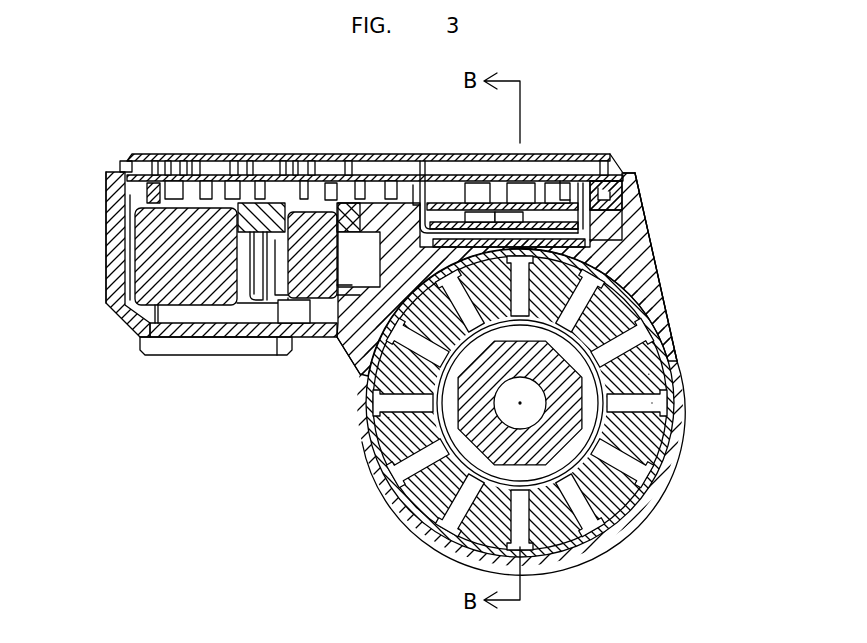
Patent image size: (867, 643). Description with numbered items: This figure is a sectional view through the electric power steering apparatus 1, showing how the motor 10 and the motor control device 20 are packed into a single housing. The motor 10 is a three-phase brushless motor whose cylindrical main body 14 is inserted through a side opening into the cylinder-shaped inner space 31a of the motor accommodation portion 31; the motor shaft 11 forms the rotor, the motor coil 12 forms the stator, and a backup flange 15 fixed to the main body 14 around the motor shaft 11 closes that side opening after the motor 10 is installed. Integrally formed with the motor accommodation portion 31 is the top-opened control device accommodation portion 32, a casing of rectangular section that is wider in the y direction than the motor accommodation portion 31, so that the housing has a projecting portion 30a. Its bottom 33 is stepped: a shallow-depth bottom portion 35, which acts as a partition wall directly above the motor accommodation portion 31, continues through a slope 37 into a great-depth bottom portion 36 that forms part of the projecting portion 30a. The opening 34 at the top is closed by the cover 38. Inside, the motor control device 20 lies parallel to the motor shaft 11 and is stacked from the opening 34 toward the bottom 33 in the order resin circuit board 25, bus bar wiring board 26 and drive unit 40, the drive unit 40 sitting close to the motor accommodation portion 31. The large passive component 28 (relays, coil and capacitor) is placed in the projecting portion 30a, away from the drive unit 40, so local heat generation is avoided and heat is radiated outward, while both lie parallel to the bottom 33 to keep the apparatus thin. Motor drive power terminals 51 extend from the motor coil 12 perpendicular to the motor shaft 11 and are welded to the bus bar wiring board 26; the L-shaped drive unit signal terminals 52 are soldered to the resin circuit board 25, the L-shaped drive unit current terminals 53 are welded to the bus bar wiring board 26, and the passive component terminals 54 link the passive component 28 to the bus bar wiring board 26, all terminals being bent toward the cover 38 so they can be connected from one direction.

The electric power steering apparatus 1 is at (58, 133).
The motor 10 is at (534, 403).
The motor shaft 11 is at (600, 390).
The stator 12 is at (489, 403).
The main body 14 is at (395, 455).
The backup flange 15 is at (375, 385).
The motor control device 20 is at (616, 186).
The resin circuit board 25 is at (323, 160).
The bus bar wiring board 26 is at (562, 165).
The passive component 28 is at (120, 313).
The projecting portion 30a is at (113, 255).
The motor accommodation portion 31 is at (668, 470).
The inner space 31a is at (405, 512).
The control device accommodation portion 32 is at (635, 208).
The bottom 33 is at (277, 340).
The opening 34 is at (126, 162).
The shallow-depth bottom portion 35 is at (622, 278).
The great-depth bottom portion 36 is at (208, 342).
The slope 37 is at (335, 337).
The cover 38 is at (452, 173).
The drive unit 40 is at (600, 240).
The motor drive power terminals 51 is at (478, 182).
The drive unit signal terminals 52 is at (420, 160).
The drive unit current terminals 53 is at (598, 160).
The passive component terminals 54 is at (147, 193).